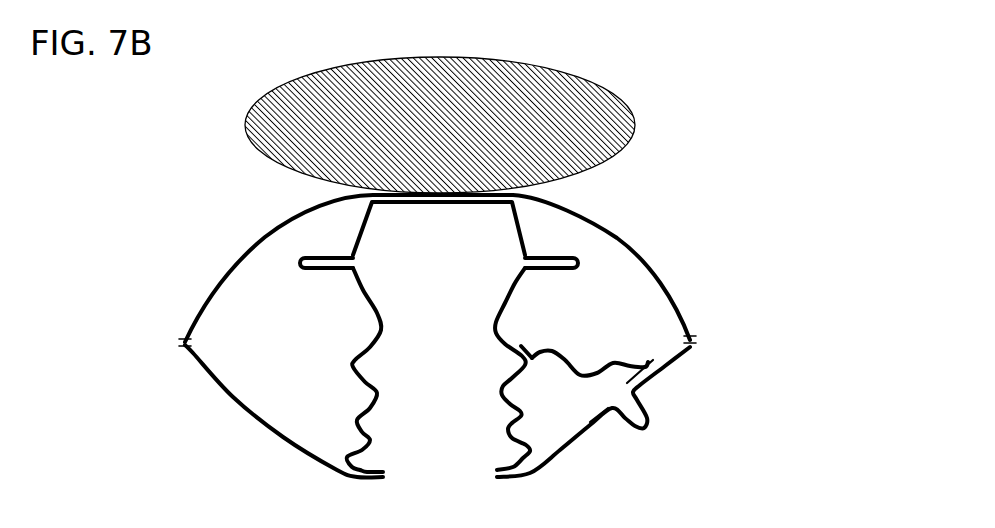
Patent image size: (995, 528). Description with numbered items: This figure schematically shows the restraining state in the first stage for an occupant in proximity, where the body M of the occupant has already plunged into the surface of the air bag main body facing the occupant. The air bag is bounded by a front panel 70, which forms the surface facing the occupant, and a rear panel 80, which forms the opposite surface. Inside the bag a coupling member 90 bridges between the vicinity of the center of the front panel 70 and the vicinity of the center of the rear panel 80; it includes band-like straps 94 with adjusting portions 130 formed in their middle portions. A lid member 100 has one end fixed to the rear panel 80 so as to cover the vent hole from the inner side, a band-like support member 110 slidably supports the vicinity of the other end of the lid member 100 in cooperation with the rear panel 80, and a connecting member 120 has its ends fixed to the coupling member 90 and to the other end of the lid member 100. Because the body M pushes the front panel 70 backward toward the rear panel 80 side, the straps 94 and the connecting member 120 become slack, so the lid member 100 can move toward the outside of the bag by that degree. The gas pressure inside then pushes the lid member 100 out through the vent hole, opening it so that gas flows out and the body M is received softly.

The body M is at (636, 126).
The front panel 70 is at (228, 272).
The rear panel 80 is at (250, 413).
The coupling member 90 is at (492, 305).
The strap 94 is at (522, 224).
The lid member 100 is at (650, 430).
The support member 110 is at (628, 381).
The connecting member 120 is at (623, 360).
The adjusting portion 130 is at (314, 272).